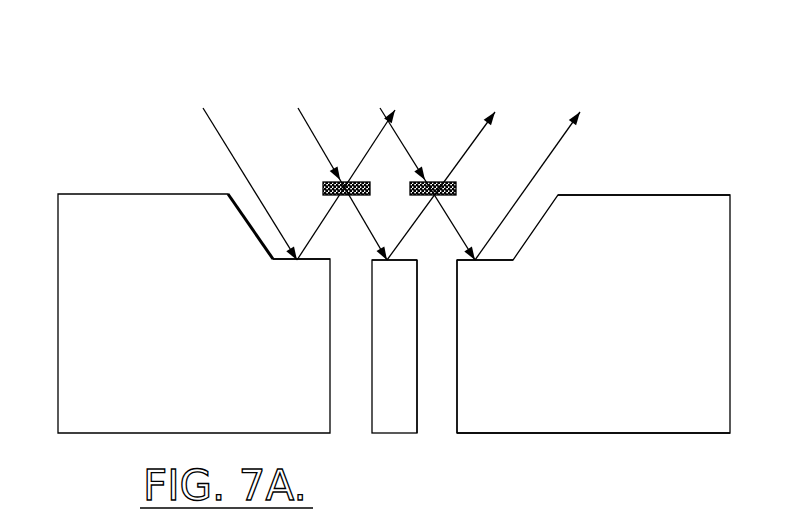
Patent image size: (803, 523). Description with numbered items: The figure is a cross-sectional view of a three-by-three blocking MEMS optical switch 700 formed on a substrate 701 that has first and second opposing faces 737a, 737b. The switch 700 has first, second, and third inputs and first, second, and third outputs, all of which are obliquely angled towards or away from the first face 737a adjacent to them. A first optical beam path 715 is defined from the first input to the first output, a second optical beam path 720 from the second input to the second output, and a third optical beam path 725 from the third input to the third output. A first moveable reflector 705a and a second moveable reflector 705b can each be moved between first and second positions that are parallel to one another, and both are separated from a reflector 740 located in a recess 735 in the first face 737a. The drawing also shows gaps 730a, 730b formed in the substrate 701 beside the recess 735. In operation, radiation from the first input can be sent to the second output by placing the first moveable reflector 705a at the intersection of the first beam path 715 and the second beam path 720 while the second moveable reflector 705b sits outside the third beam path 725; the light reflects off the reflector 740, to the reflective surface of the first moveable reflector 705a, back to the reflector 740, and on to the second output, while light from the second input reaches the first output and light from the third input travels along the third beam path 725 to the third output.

The 3×3 blocking MEMS optical switch 700 is at (394, 256).
The substrate 701 is at (659, 419).
The first moveable reflector 705a is at (345, 152).
The second moveable reflector 705b is at (430, 153).
The first optical beam path 715 is at (215, 128).
The second optical beam path 720 is at (308, 127).
The third optical beam path 725 is at (398, 143).
The first gap 730a is at (384, 366).
The second gap 730b is at (460, 366).
The recess 735 is at (542, 186).
The first face 737a is at (644, 170).
The second face 737b is at (593, 457).
The reflector 740 is at (389, 303).